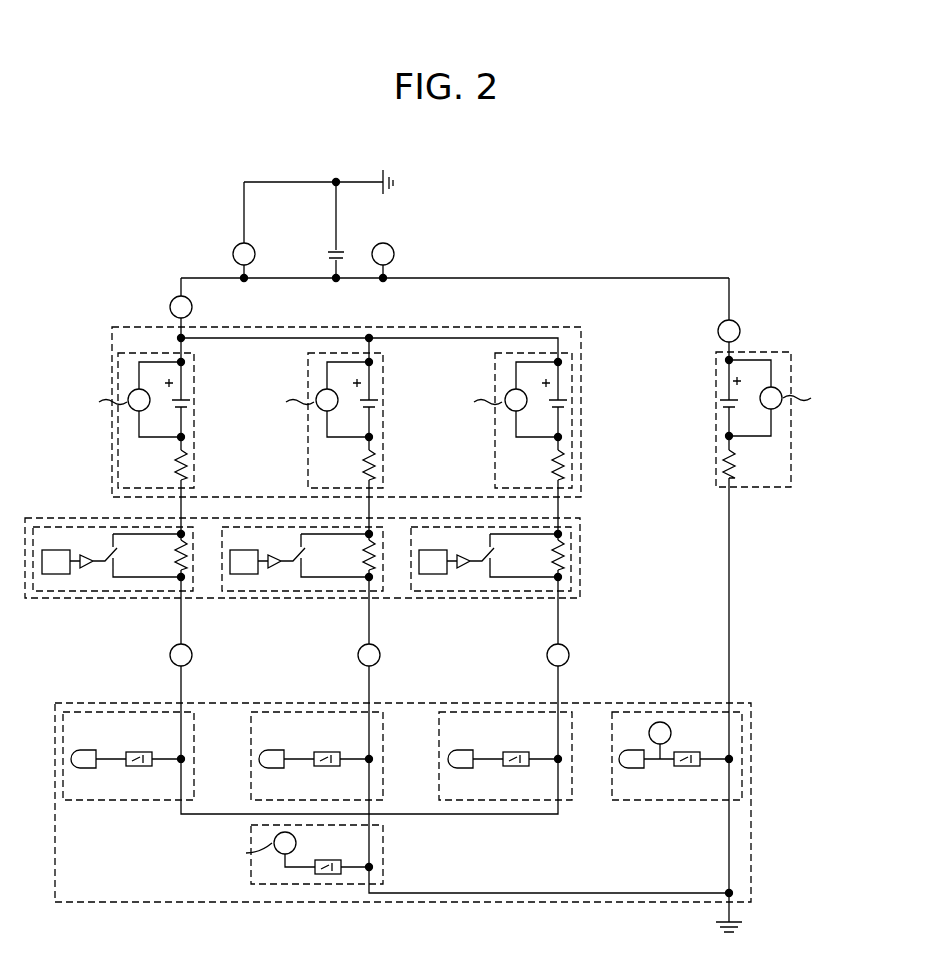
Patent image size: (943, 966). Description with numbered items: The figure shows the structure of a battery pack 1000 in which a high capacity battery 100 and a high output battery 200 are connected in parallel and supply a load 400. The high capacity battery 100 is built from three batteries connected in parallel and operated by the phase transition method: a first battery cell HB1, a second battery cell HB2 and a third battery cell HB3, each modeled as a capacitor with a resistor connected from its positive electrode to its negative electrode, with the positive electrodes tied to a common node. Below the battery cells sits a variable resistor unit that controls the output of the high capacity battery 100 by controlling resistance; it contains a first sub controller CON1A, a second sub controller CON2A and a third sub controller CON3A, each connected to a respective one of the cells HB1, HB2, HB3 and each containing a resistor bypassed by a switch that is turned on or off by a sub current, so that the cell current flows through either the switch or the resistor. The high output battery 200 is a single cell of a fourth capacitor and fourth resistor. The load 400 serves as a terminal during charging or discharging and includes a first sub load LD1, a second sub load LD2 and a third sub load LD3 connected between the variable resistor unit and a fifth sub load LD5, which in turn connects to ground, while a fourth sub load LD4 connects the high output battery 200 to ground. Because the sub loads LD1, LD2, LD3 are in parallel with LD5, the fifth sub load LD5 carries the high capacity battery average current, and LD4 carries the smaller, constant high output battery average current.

The battery pack 1000 is at (799, 176).
The high capacity battery 100 is at (581, 368).
The high output battery 200 is at (791, 361).
The load 400 is at (751, 725).
The first battery cell HB1 is at (118, 445).
The second battery cell HB2 is at (308, 445).
The third battery cell HB3 is at (495, 445).
The first sub controller CON1A is at (103, 598).
The second sub controller CON2A is at (292, 598).
The third sub controller CON3A is at (481, 598).
The first sub load LD1 is at (125, 712).
The second sub load LD2 is at (313, 712).
The third sub load LD3 is at (504, 712).
The fourth sub load LD4 is at (700, 712).
The fifth sub load LD5 is at (318, 884).